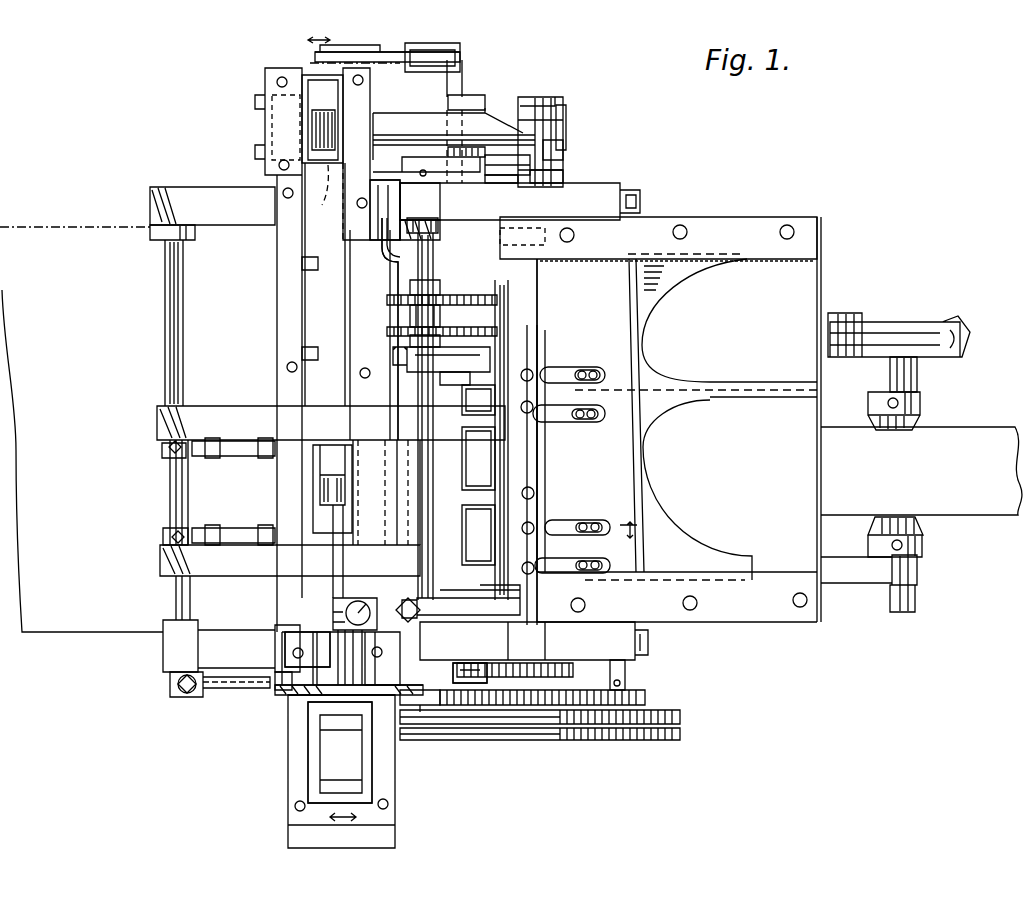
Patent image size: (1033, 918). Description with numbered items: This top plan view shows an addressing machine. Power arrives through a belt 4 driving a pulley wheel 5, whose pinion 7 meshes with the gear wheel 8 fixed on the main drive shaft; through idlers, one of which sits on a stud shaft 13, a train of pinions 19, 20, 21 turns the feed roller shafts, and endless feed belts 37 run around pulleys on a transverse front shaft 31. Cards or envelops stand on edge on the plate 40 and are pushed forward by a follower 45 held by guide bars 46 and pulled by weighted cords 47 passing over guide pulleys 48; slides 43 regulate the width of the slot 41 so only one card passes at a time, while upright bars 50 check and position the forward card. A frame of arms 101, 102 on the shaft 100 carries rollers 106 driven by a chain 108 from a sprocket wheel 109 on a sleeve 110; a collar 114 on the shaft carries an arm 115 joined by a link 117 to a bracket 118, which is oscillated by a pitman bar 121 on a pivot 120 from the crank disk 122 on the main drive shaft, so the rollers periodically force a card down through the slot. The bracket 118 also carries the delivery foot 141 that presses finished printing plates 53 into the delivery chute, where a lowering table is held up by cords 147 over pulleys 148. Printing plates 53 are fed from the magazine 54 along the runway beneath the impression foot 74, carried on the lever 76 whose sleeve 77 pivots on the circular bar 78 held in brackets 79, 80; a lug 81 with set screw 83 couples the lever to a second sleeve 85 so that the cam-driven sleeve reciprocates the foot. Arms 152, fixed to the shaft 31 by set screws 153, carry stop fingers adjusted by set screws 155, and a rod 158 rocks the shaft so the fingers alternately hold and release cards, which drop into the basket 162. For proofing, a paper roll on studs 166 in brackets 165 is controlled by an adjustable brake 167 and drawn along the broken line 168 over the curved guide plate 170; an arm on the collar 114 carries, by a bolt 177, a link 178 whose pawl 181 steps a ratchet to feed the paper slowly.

The belt 4 is at (682, 718).
The pulley wheel 5 is at (672, 741).
The pinion 7 is at (530, 753).
The gear wheel 8 is at (648, 696).
The stud shaft 13 is at (325, 441).
The pinion 19 is at (462, 678).
The pinion 20 is at (420, 703).
The pinion 21 is at (568, 668).
The shaft 31 is at (165, 324).
The feed belts 37 is at (331, 491).
The plate 40 is at (658, 419).
The slot 41 is at (540, 485).
The bars or slides 43 is at (571, 470).
The follower 45 is at (655, 298).
The guide bars 46 is at (820, 262).
The cords 47 is at (672, 404).
The guide pulleys 48 is at (579, 475).
The upright bars 50 is at (527, 574).
The printing plates 53 is at (322, 357).
The magazine 54 is at (318, 793).
The impression foot 74 is at (322, 462).
The lever 76 is at (333, 586).
The sleeve 77 is at (298, 700).
The circular bar 78 is at (276, 690).
The bracket 79 is at (290, 705).
The bracket 80 is at (358, 648).
The lug 81 is at (340, 626).
The set screw 83 is at (358, 613).
The second sleeve 85 is at (380, 698).
The shaft 100 is at (433, 487).
The arm 101 is at (463, 360).
The arm 102 is at (460, 612).
The rollers 106 is at (468, 410).
The chain 108 is at (442, 321).
The sprocket wheel 109 is at (467, 292).
The sleeve 110 is at (520, 201).
The collar 114 is at (427, 201).
The arm 115 is at (387, 180).
The link 117 is at (338, 170).
The bracket 118 is at (430, 107).
The pivot 120 is at (540, 100).
The pitman bar 121 is at (567, 113).
The crank disk 122 is at (566, 138).
The delivery foot 141 is at (323, 102).
The cords 147 is at (463, 60).
The pulleys 148 is at (387, 46).
The rods or arms 152 is at (228, 457).
The set screws 153 is at (172, 533).
The set screws 155 is at (226, 527).
The rod 158 is at (222, 690).
The basket 162 is at (106, 634).
The brackets 165 is at (918, 374).
The studs 166 is at (921, 403).
The adjustable brake 167 is at (928, 305).
The broken line 168 is at (921, 471).
The guide plate 170 is at (362, 437).
The bolt 177 is at (566, 163).
The link 178 is at (505, 180).
The pawl 181 is at (566, 178).